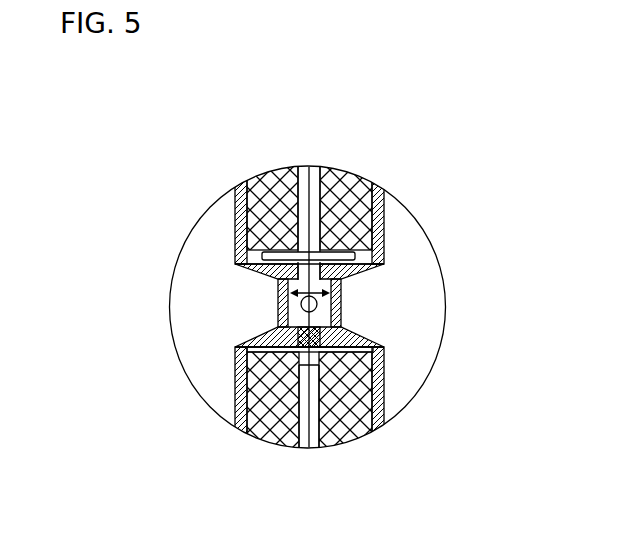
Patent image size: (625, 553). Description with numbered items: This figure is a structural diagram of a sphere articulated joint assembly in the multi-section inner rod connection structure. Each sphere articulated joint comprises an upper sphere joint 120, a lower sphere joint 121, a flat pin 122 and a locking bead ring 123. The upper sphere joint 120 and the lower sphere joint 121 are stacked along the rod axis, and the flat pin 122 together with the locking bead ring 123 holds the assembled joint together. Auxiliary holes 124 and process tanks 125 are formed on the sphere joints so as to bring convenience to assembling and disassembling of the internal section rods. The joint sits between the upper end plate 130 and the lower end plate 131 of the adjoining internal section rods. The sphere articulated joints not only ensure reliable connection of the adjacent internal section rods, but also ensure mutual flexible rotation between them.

The upper sphere joint 120 is at (240, 204).
The lower sphere joint 121 is at (388, 396).
The flat pin 122 is at (192, 314).
The locking bead ring 123 is at (172, 212).
The auxiliary hole 124 is at (342, 318).
The process tank 125 is at (410, 267).
The upper end plate 130 is at (240, 392).
The lower end plate 131 is at (451, 198).